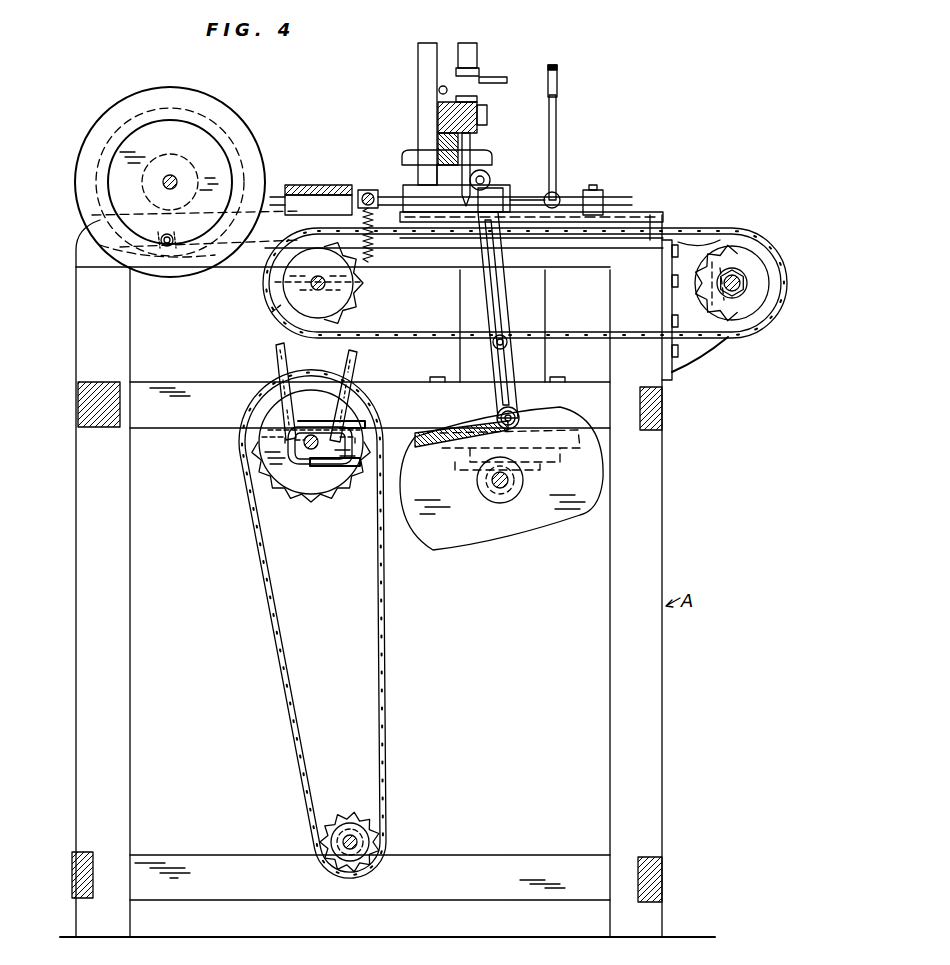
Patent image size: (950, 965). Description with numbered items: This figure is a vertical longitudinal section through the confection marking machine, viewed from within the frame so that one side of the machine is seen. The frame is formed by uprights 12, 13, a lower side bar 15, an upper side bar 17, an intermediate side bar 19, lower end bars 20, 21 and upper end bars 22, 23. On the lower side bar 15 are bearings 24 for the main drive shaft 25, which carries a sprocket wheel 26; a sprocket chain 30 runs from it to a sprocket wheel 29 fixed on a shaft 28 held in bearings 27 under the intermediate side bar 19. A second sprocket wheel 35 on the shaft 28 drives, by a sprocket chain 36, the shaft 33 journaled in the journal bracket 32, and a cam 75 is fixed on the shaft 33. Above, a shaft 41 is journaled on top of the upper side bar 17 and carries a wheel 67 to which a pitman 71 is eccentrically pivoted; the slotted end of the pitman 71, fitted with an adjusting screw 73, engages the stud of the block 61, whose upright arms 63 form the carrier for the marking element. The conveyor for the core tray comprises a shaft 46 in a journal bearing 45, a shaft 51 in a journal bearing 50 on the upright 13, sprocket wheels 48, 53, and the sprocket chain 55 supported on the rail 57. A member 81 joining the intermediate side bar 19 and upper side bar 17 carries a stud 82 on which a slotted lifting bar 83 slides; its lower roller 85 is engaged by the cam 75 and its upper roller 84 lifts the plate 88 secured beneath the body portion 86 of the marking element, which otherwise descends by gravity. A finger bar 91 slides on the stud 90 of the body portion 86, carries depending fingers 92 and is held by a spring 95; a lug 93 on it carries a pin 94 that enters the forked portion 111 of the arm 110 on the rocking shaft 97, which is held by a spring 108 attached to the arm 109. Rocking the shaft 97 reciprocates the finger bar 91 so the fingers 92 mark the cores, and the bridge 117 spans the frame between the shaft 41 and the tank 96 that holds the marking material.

The upright 12 is at (118, 736).
The upright 13 is at (654, 720).
The lower side bar 15 is at (443, 858).
The upper side bar 17 is at (243, 262).
The intermediate side bar 19 is at (188, 381).
The lower end bar 20 is at (94, 854).
The lower end bar 21 is at (660, 876).
The upper end bar 22 is at (78, 398).
The upper end bar 23 is at (663, 412).
The bearing 24 is at (386, 823).
The shaft 25 is at (352, 832).
The sprocket wheel 26 is at (330, 812).
The bearing 27 is at (268, 440).
The shaft 28 is at (305, 470).
The sprocket wheel 29 is at (262, 508).
The sprocket chain 30 is at (268, 628).
The journal bracket 32 is at (428, 432).
The shaft 33 is at (502, 490).
The sprocket wheel 35 is at (322, 470).
The sprocket chain 36 is at (348, 470).
The shaft 41 is at (177, 177).
The journal bearing 45 is at (272, 312).
The shaft 46 is at (326, 290).
The sprocket wheel 48 is at (365, 290).
The journal bearing 50 is at (693, 350).
The shaft 51 is at (745, 275).
The sprocket wheel 53 is at (772, 280).
The sprocket chain 55 is at (760, 323).
The rail 57 is at (597, 243).
The block 61 is at (405, 175).
The arm 63 is at (462, 44).
The wheel 67 is at (128, 110).
The pitman 71 is at (210, 262).
The adjusting screw 73 is at (528, 197).
The cam 75 is at (572, 510).
The member 81 is at (460, 361).
The stud 82 is at (508, 345).
The lifting bar 83 is at (505, 294).
The roller 84 is at (486, 172).
The roller 85 is at (520, 416).
The body portion 86 is at (437, 114).
The plate 88 is at (410, 150).
The stud 90 is at (488, 116).
The finger bar 91 is at (482, 128).
The finger 92 is at (462, 172).
The lug 93 is at (479, 72).
The pin 94 is at (507, 75).
The spring 95 is at (438, 90).
The tank 96 is at (500, 190).
The shaft 97 is at (612, 199).
The spring 108 is at (386, 237).
The arm 109 is at (363, 190).
The arm 110 is at (557, 165).
The forked portion 111 is at (557, 78).
The bridge 117 is at (313, 188).